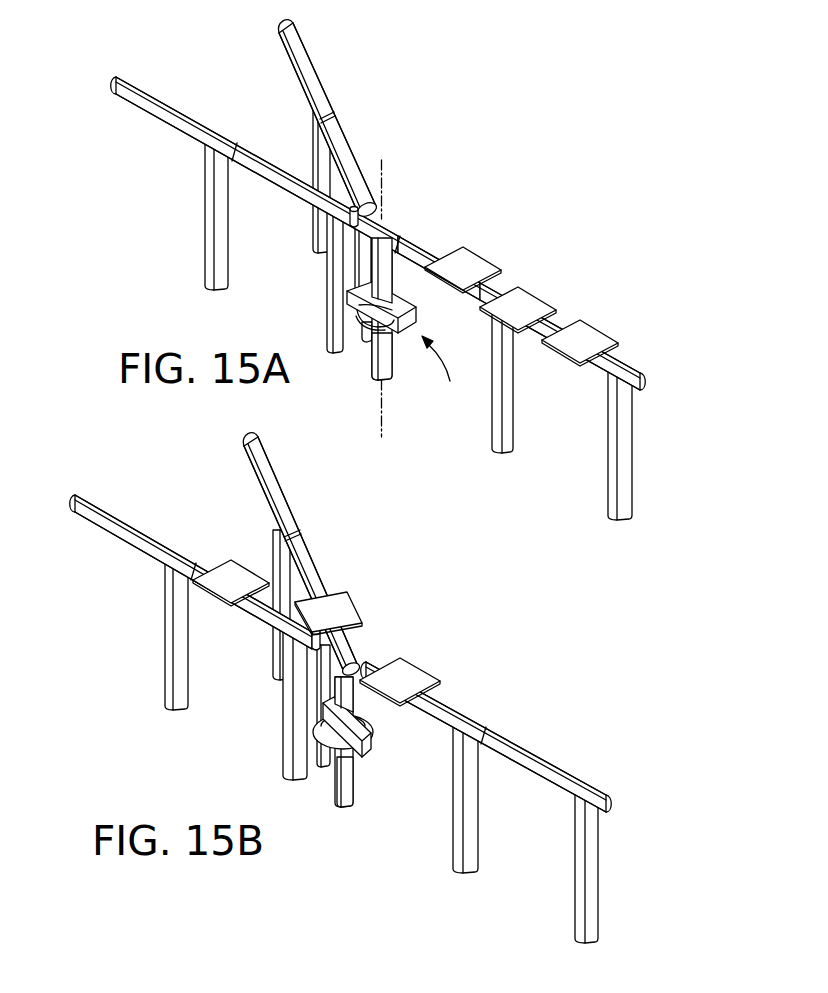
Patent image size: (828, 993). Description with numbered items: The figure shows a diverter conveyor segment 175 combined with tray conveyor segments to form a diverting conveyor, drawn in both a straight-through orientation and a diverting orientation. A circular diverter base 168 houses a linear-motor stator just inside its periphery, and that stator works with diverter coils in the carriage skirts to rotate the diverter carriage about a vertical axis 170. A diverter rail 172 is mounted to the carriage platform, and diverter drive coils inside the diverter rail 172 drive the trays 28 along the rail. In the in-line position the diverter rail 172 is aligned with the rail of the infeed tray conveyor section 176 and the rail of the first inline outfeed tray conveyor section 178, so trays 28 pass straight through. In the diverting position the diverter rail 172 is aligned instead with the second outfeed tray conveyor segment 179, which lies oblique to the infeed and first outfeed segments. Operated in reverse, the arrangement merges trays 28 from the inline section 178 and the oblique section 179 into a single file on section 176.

In FIG. 15A, the first inline outfeed tray conveyor section 178 is at (160, 101).
In FIG. 15A, the diverter rail 172 is at (388, 233).
In FIG. 15A, the circular diverter base 168 is at (399, 291).
In FIG. 15A, the tray 28 is at (521, 292).
In FIG. 15B, the tray 28 is at (348, 611).
In FIG. 15A, the infeed tray conveyor section 176 is at (616, 358).
In FIG. 15B, the infeed tray conveyor section 176 is at (541, 765).
In FIG. 15A, the diverter segment 175 is at (450, 373).
In FIG. 15A, the vertical axis 170 is at (383, 428).
In FIG. 15B, the second outfeed tray conveyor segment 179 is at (300, 549).